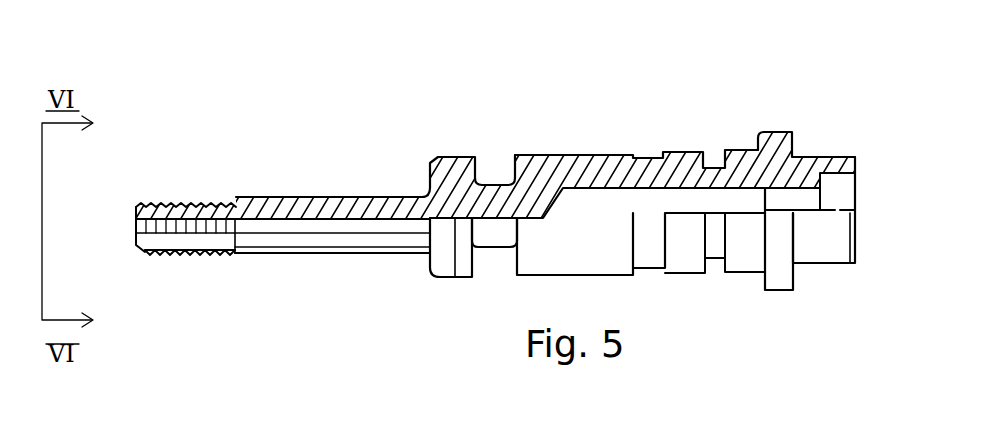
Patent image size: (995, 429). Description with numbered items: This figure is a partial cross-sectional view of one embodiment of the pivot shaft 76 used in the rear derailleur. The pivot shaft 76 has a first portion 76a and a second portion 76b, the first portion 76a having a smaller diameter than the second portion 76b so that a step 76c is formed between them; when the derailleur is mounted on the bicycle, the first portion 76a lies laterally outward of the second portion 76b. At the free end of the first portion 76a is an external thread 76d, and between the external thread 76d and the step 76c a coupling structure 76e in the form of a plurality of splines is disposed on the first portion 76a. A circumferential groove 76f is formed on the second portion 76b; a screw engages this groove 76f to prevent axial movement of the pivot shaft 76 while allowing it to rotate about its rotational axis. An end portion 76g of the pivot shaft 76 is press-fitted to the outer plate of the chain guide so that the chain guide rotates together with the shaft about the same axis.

The pivot shaft 76 is at (345, 142).
The first portion 76a is at (177, 195).
The second portion 76b is at (628, 142).
The step 76c is at (427, 184).
The external thread 76d is at (183, 256).
The coupling structure 76e is at (310, 254).
The circumferential groove 76f is at (495, 180).
The end portion 76g is at (805, 152).